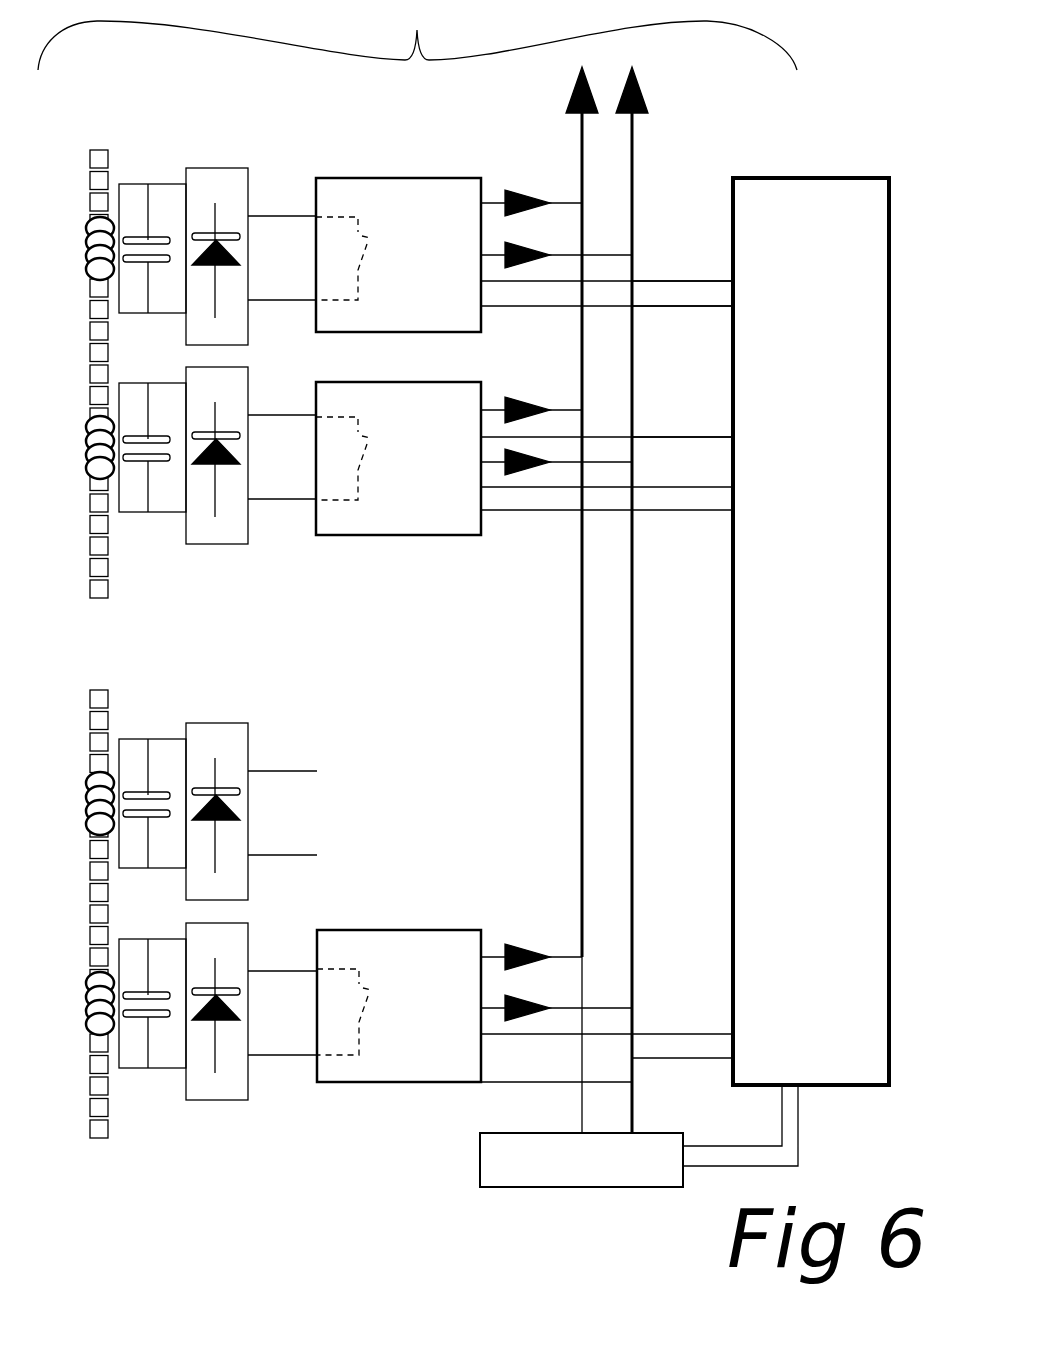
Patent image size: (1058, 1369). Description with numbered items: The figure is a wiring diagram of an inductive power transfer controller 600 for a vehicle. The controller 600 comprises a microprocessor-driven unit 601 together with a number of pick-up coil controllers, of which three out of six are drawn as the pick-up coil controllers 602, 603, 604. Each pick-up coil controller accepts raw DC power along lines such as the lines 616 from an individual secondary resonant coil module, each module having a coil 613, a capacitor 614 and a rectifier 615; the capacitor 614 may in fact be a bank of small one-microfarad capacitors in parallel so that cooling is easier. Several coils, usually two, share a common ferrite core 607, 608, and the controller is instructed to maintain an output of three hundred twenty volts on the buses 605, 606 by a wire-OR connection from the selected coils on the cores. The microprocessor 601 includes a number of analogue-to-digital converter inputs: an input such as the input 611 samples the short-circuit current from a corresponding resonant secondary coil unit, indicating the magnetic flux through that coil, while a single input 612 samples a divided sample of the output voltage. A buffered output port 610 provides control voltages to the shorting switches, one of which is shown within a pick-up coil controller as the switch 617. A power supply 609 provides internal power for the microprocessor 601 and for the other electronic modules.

The IPT controller 600 is at (417, 35).
The microprocessor-driven unit 601 is at (795, 178).
The pick-up coil controller 602 is at (386, 178).
The pick-up coil controller 603 is at (388, 382).
The pick-up coil controller 604 is at (417, 930).
The bus 605 is at (582, 183).
The bus 606 is at (632, 182).
The ferrite core 607 is at (108, 1098).
The ferrite core 608 is at (138, 130).
The power supply 609 is at (480, 1158).
The buffered output port 610 is at (713, 281).
The analogue-to-digital input 611 is at (713, 306).
The analogue-to-digital input 612 is at (725, 436).
The coil 613 is at (88, 800).
The capacitor 614 is at (148, 805).
The rectifier 615 is at (248, 755).
The lines 616 is at (300, 853).
The switch 617 is at (368, 482).